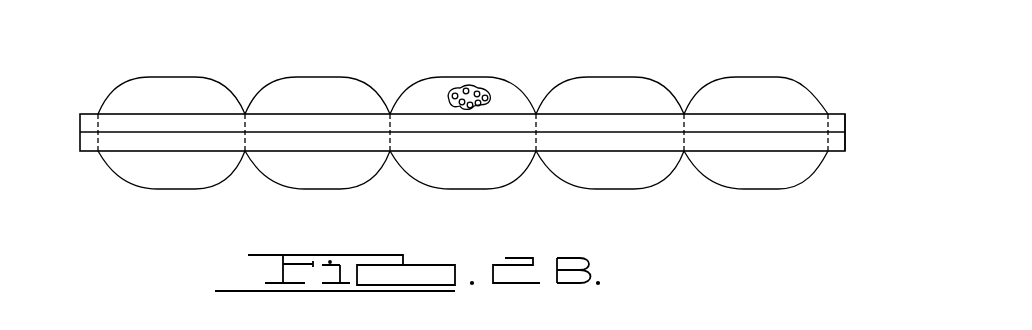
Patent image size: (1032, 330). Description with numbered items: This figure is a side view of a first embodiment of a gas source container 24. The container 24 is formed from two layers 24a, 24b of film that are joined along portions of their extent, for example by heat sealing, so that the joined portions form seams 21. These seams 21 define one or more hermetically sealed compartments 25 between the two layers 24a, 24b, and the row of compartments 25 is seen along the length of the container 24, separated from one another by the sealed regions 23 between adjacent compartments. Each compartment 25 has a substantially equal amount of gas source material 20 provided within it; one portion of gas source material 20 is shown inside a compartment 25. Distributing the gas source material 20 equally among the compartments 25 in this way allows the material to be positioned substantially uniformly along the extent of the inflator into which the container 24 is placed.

The gas source material 20 is at (463, 88).
The seams 21 is at (98, 152).
The transverse seal 23 is at (390, 110).
The container 24 is at (77, 110).
The first layer of film 24a is at (838, 112).
The second layer of film 24b is at (848, 153).
The hermetically sealed compartments 25 is at (605, 90).